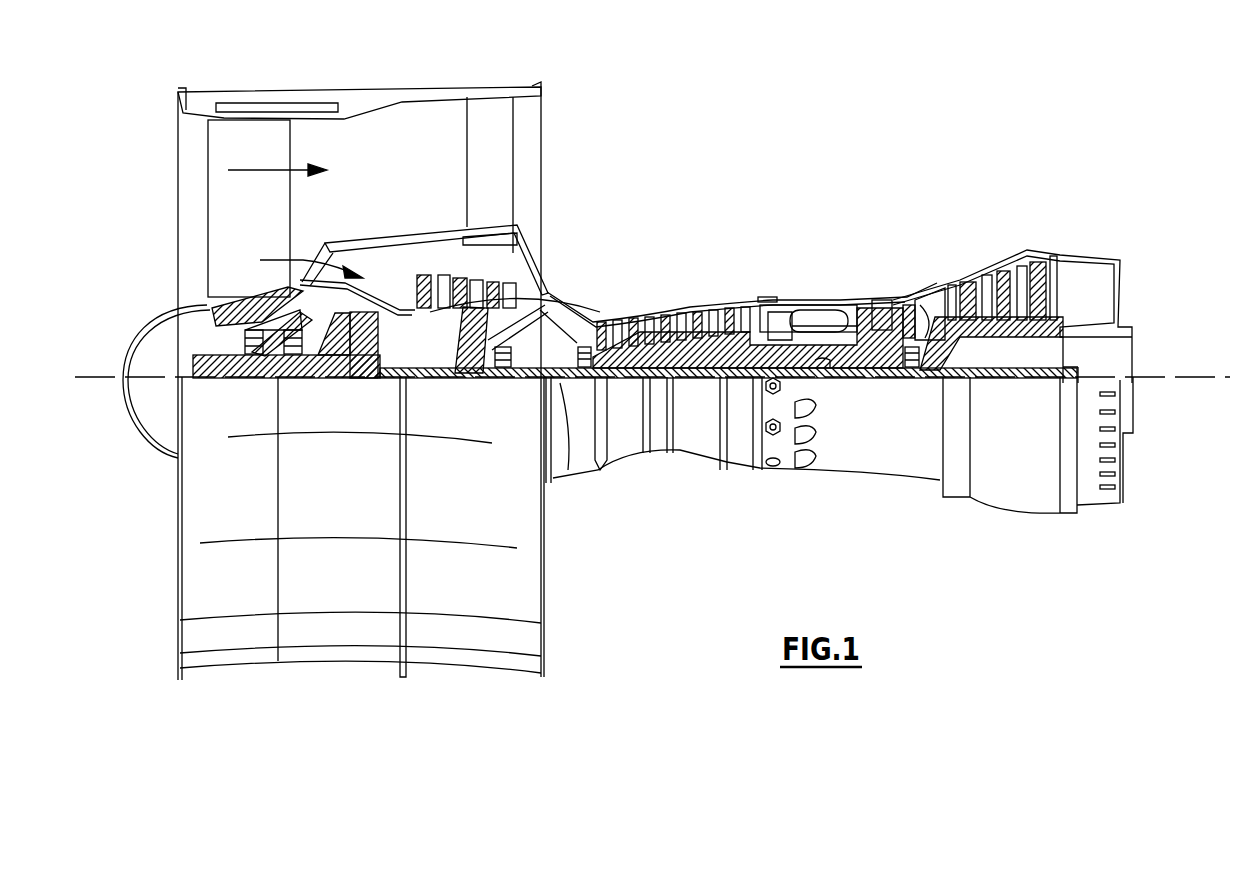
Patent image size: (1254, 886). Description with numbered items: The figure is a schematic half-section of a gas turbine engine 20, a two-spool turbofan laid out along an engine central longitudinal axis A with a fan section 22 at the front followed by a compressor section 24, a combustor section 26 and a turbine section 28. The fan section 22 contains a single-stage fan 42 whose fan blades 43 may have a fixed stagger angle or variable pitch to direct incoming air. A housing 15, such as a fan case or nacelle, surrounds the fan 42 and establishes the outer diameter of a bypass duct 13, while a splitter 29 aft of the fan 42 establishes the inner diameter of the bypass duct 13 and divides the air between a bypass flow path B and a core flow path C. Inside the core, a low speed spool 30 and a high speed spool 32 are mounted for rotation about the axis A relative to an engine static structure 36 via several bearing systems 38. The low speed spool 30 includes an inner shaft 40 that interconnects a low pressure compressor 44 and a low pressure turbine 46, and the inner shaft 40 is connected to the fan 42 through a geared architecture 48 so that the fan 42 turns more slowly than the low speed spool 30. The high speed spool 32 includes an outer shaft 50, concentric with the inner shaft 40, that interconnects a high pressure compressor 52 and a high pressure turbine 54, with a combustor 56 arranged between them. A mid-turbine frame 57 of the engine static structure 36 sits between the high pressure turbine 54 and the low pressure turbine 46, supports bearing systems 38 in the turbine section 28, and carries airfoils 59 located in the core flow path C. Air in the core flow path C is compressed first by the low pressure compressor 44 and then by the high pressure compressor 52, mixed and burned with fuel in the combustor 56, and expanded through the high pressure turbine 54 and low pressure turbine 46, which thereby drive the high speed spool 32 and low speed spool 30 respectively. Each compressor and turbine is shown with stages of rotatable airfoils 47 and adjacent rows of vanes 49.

The gas turbine engine 20 is at (828, 141).
The fan section 22 is at (288, 84).
The compressor section 24 is at (597, 280).
The combustor section 26 is at (818, 262).
The turbine section 28 is at (970, 225).
The bypass duct 13 is at (420, 118).
The housing 15 is at (360, 102).
The splitter 29 is at (340, 240).
The low speed spool 30 is at (698, 395).
The high speed spool 32 is at (745, 313).
The engine static structure 36 is at (740, 480).
The bearing systems 38 is at (500, 362).
The inner shaft 40 is at (562, 383).
The fan 42 is at (262, 227).
The fan blades 43 is at (278, 227).
The low pressure compressor 44 is at (460, 300).
The low pressure turbine 46 is at (1003, 270).
The rotatable airfoils 47 is at (423, 270).
The geared architecture 48 is at (367, 363).
The vanes 49 is at (443, 277).
The outer shaft 50 is at (822, 365).
The high pressure compressor 52 is at (678, 313).
The high pressure turbine 54 is at (890, 300).
The combustor 56 is at (817, 313).
The mid-turbine frame 57 is at (928, 276).
The airfoils 59 is at (942, 330).
The engine central longitudinal axis A is at (1217, 380).
The bypass flow path B is at (263, 167).
The core flow path C is at (303, 261).